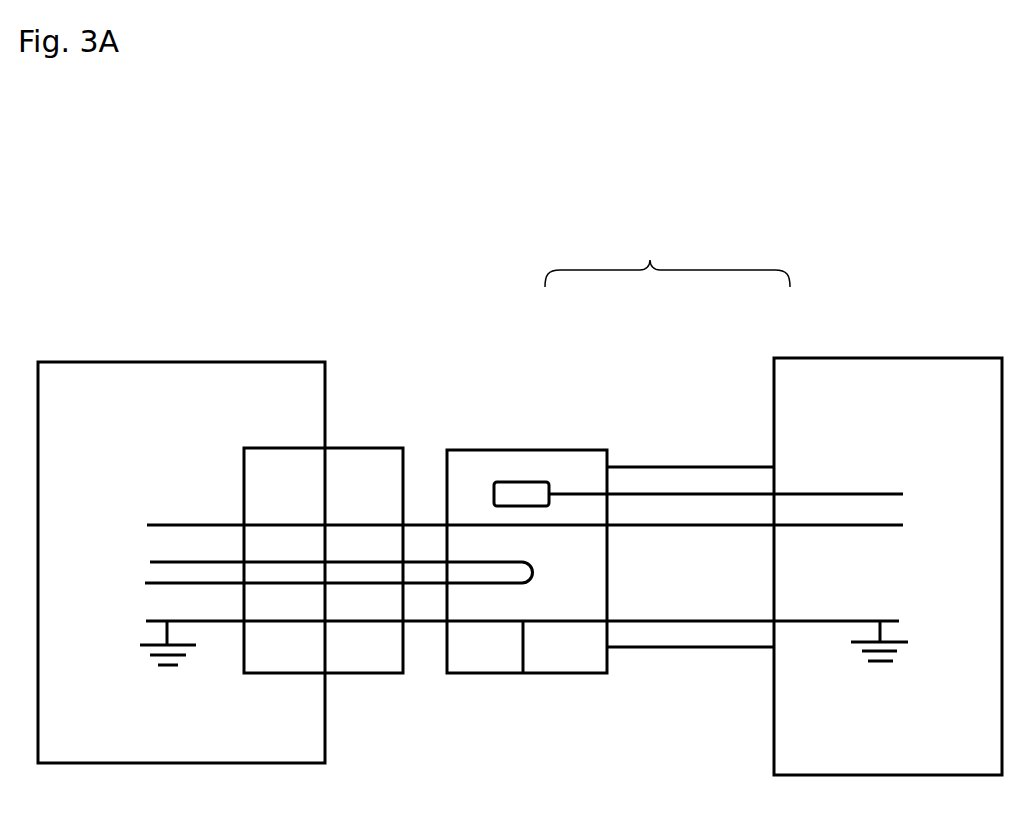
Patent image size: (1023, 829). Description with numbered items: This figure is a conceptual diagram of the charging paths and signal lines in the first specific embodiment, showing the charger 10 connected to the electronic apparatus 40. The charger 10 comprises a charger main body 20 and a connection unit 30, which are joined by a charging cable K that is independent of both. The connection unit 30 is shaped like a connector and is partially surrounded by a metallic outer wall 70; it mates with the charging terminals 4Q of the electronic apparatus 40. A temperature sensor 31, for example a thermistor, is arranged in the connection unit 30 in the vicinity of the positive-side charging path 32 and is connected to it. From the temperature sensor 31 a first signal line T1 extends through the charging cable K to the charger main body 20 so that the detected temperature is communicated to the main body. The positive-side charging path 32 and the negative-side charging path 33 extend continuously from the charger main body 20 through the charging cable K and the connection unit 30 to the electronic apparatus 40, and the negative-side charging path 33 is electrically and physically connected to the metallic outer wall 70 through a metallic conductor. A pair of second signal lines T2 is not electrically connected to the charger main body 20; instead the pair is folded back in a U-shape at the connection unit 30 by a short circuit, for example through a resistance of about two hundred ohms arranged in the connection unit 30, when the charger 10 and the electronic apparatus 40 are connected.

The charger 10 is at (667, 259).
The charger main body 20 is at (815, 378).
The connection unit 30 is at (558, 460).
The temperature sensor 31 is at (512, 487).
The positive-side charging path 32 is at (697, 520).
The negative-side charging path 33 is at (708, 622).
The electronic apparatus 40 is at (155, 390).
The charging terminals 4Q is at (356, 462).
The metallic outer wall 70 is at (540, 674).
The charging cable K is at (660, 466).
The first signal line T1 is at (838, 492).
The second signal line T2 is at (152, 583).